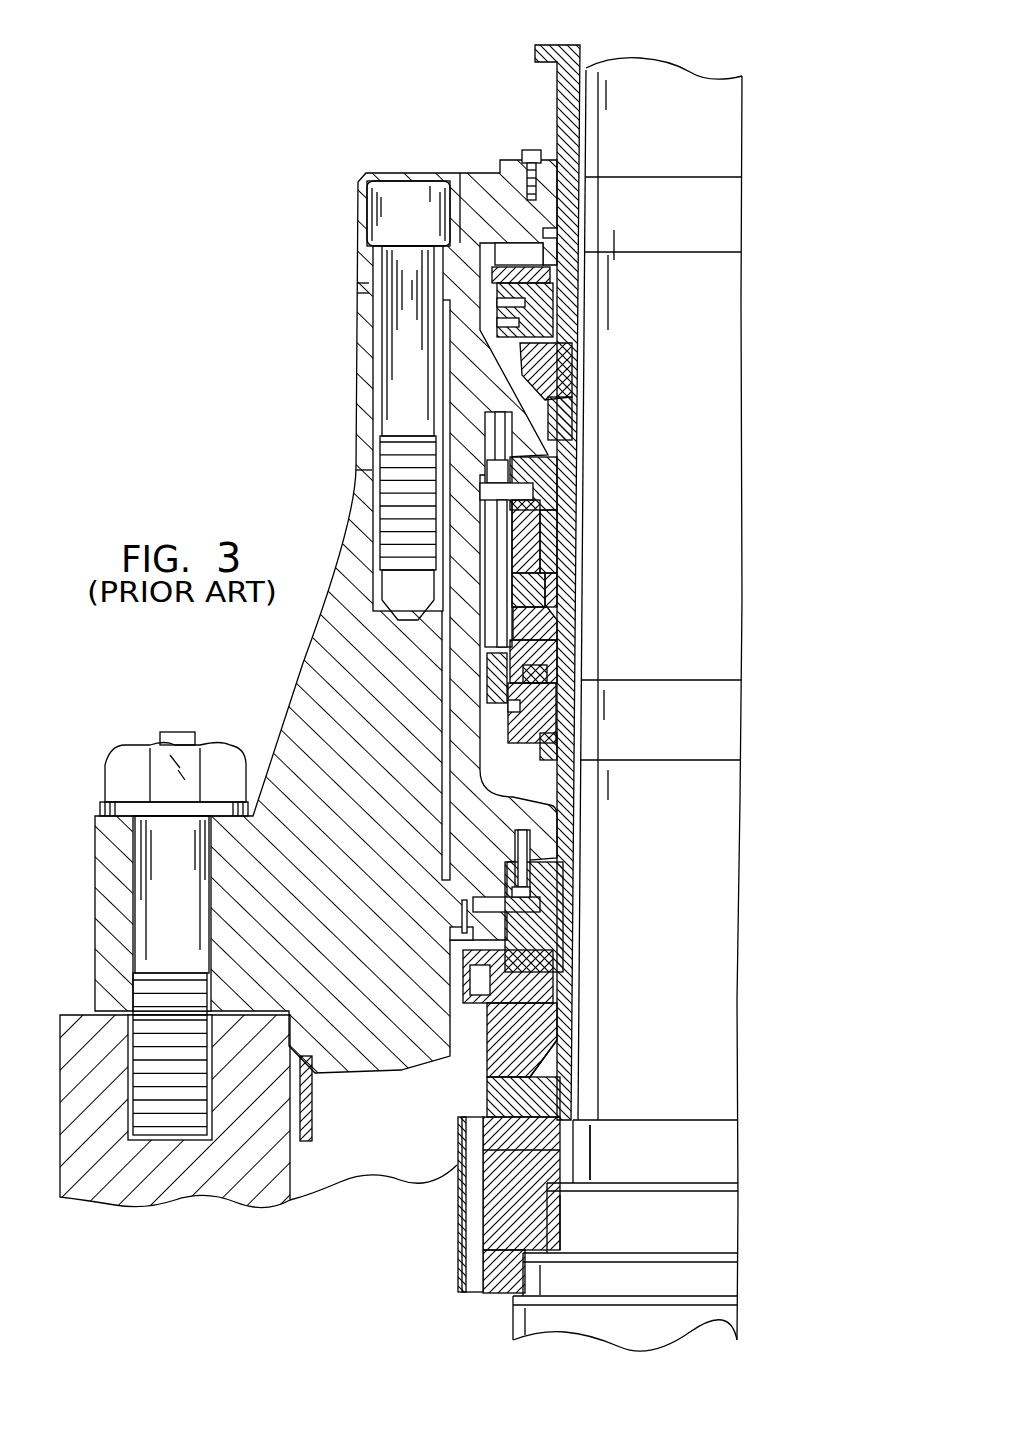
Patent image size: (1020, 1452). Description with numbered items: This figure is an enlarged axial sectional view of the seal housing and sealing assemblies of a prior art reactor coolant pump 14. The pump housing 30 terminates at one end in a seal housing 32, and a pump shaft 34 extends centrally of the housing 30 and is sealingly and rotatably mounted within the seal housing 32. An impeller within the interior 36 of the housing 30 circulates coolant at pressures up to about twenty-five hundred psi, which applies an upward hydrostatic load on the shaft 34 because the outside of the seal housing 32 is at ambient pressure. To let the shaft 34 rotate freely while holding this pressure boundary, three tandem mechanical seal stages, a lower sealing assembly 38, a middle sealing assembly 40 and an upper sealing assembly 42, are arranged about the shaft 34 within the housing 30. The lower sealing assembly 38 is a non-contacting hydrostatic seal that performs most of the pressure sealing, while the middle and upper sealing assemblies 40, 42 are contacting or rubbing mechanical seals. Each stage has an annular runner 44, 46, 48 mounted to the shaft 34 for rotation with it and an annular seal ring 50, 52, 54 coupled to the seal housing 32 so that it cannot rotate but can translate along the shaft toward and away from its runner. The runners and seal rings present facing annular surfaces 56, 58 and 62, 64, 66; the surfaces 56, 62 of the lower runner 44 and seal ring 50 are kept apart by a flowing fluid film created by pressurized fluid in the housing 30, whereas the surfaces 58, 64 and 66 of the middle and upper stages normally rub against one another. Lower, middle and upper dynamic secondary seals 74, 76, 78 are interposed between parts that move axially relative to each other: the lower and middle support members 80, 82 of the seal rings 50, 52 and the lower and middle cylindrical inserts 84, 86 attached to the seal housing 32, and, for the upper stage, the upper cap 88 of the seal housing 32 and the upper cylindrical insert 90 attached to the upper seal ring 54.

The reactor coolant pump 14 is at (727, 68).
The pump housing 30 is at (232, 1192).
The seal housing 32 is at (342, 675).
The pump shaft 34 is at (720, 140).
The interior 36 is at (373, 1165).
The lower sealing assembly 38 is at (556, 1061).
The middle sealing assembly 40 is at (603, 586).
The upper sealing assembly 42 is at (610, 353).
The runner 44 is at (550, 1105).
The runner 46 is at (560, 676).
The runner 48 is at (556, 396).
The seal ring 50 is at (540, 1052).
The seal ring 52 is at (548, 578).
The seal ring 54 is at (548, 292).
The annular surface 56 is at (556, 1050).
The annular surface 58 is at (538, 608).
The annular surface 62 is at (490, 1098).
The annular surface 64 is at (525, 655).
The annular surface 66 is at (550, 362).
The lower dynamic secondary seal 74 is at (546, 935).
The middle dynamic secondary seal 76 is at (548, 508).
The upper dynamic secondary seal 78 is at (560, 212).
The lower support member 80 is at (546, 988).
The middle support member 82 is at (556, 556).
The lower cylindrical insert 84 is at (556, 892).
The middle cylindrical insert 86 is at (550, 472).
The upper cap 88 is at (485, 180).
The upper cylindrical insert 90 is at (560, 240).